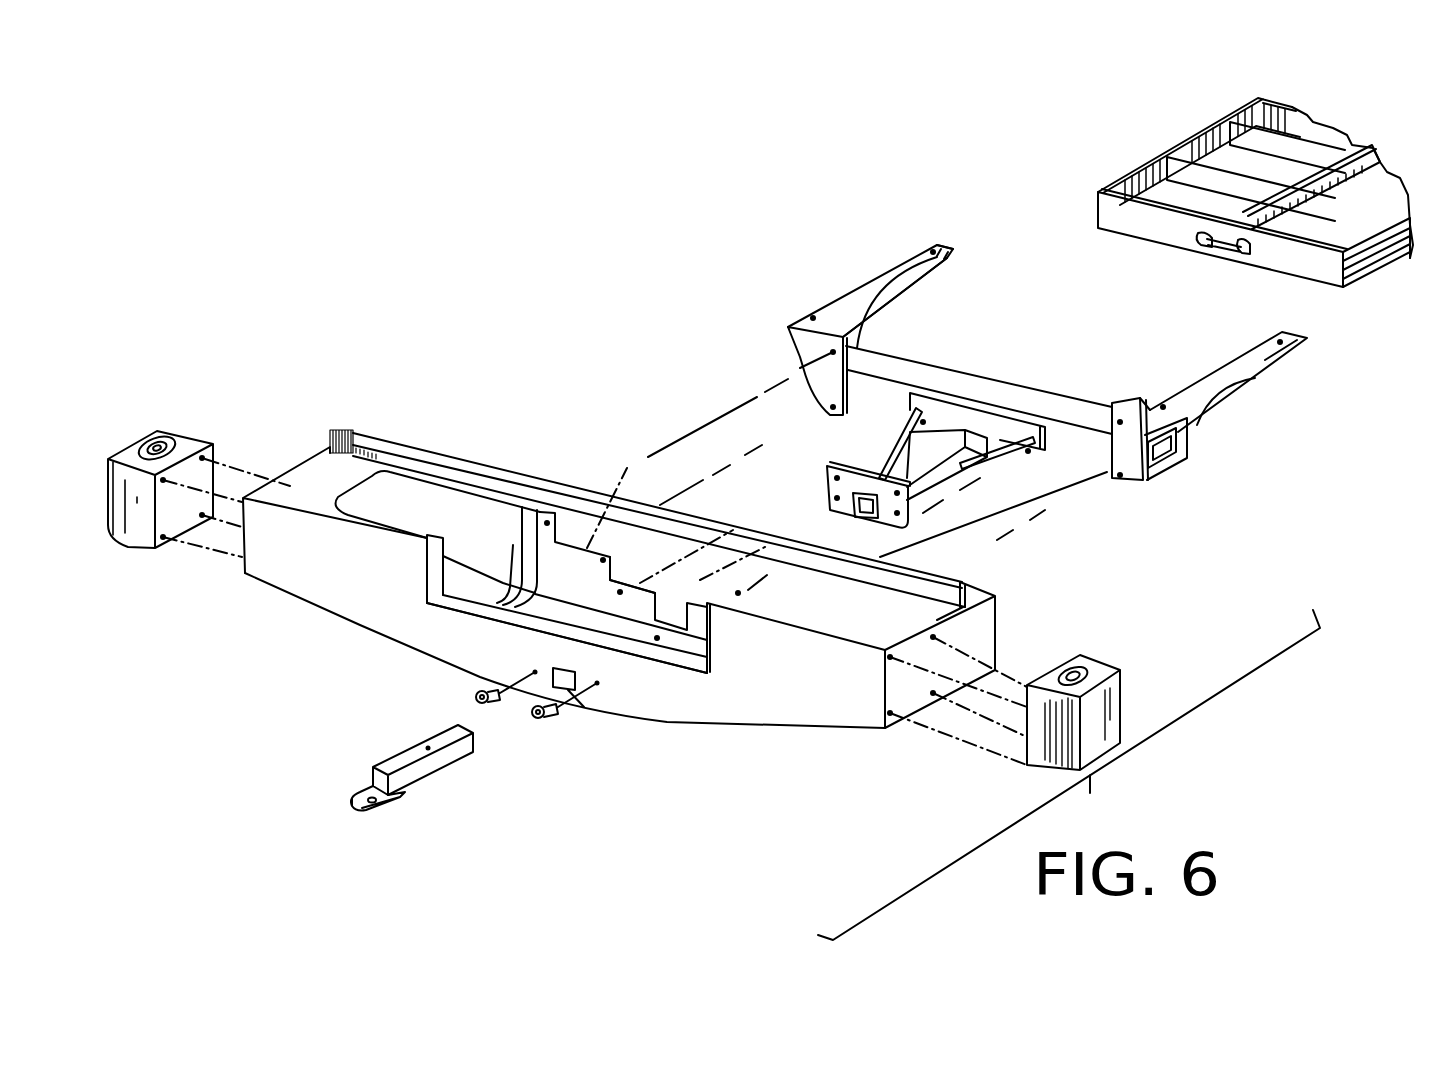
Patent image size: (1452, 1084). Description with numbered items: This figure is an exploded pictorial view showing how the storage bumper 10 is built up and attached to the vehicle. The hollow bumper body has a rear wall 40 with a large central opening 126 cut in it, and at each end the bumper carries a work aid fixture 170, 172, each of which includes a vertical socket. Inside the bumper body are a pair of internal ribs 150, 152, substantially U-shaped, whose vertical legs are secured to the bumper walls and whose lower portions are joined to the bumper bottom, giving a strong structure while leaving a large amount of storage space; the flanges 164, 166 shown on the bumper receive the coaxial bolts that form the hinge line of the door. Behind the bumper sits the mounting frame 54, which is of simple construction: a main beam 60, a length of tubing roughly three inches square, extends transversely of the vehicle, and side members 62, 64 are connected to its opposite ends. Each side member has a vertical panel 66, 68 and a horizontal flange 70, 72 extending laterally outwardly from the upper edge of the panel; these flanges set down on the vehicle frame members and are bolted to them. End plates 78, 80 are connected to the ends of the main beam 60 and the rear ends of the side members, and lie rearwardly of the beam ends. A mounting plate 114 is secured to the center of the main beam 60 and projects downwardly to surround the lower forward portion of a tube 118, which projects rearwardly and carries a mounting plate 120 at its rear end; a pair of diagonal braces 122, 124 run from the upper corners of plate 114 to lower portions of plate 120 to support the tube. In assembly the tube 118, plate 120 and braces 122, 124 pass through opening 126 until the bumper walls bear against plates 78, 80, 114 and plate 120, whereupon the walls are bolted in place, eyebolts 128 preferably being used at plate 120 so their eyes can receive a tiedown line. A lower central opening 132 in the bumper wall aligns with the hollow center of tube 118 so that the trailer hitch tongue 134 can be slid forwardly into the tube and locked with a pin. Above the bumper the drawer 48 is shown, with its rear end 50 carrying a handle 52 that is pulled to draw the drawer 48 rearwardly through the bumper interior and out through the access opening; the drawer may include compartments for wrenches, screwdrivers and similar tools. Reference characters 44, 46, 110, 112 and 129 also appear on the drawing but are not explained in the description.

The storage bumper 10 is at (382, 675).
The bumper rear wall 40 is at (563, 575).
The left end tube portion 44 is at (287, 468).
The right end tube portion 46 is at (976, 633).
The drawer 48 is at (1226, 203).
The rear end of the drawer 50 is at (1113, 223).
The handle 52 is at (1203, 249).
The mounting frame 54 is at (853, 312).
The main beam 60 is at (970, 372).
The side member 62 is at (830, 302).
The side member 64 is at (1233, 387).
The vertical panel 66 is at (877, 310).
The vertical panel 68 is at (1183, 422).
The horizontal flange 70 is at (902, 262).
The horizontal flange 72 is at (1270, 365).
The end plate 78 is at (823, 413).
The end plate 80 is at (1133, 473).
The right arm bolt hole 110 is at (1272, 340).
The left arm bolt hole 112 is at (920, 250).
The mounting plate 114 is at (1008, 430).
The tube 118 is at (958, 468).
The mounting plate 120 is at (826, 478).
The diagonal brace 122 is at (918, 440).
The diagonal brace 124 is at (998, 452).
The central opening 126 is at (653, 558).
The eyebolt 128 is at (472, 683).
The bolt 129 is at (537, 718).
The lower central opening 132 is at (583, 702).
The trailer hitch tongue 134 is at (433, 773).
The internal rib 150 is at (505, 595).
The internal rib 152 is at (812, 626).
The flange 164 is at (427, 590).
The flange 166 is at (685, 662).
The work aid fixture 170 is at (152, 447).
The work aid fixture 172 is at (1150, 642).